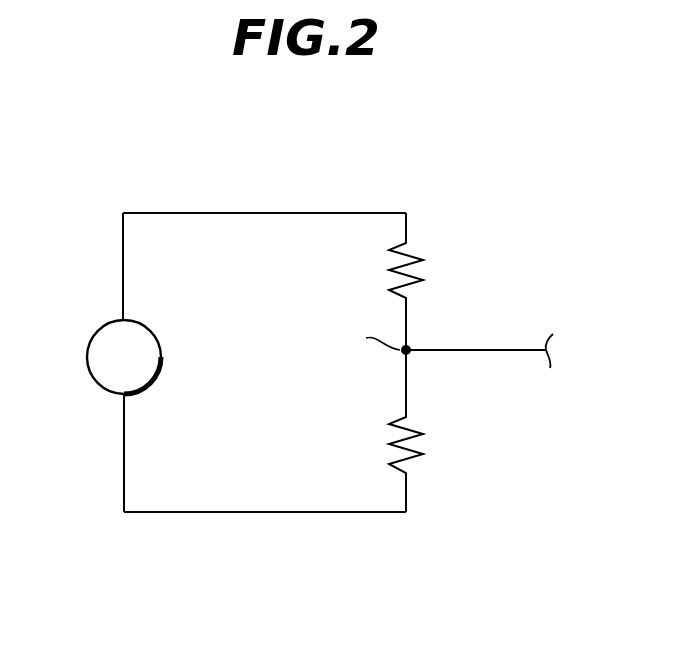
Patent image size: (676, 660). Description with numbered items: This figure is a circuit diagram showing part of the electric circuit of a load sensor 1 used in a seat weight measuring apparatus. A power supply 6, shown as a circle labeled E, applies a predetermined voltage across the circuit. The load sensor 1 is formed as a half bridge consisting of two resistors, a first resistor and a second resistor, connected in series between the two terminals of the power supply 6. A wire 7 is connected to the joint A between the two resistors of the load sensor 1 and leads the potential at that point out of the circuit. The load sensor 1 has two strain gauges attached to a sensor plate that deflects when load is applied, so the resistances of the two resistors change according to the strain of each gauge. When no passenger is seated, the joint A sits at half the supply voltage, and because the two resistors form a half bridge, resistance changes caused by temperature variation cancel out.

The load sensor 1 is at (407, 213).
The power supply 6 is at (93, 337).
The wire 7 is at (465, 350).